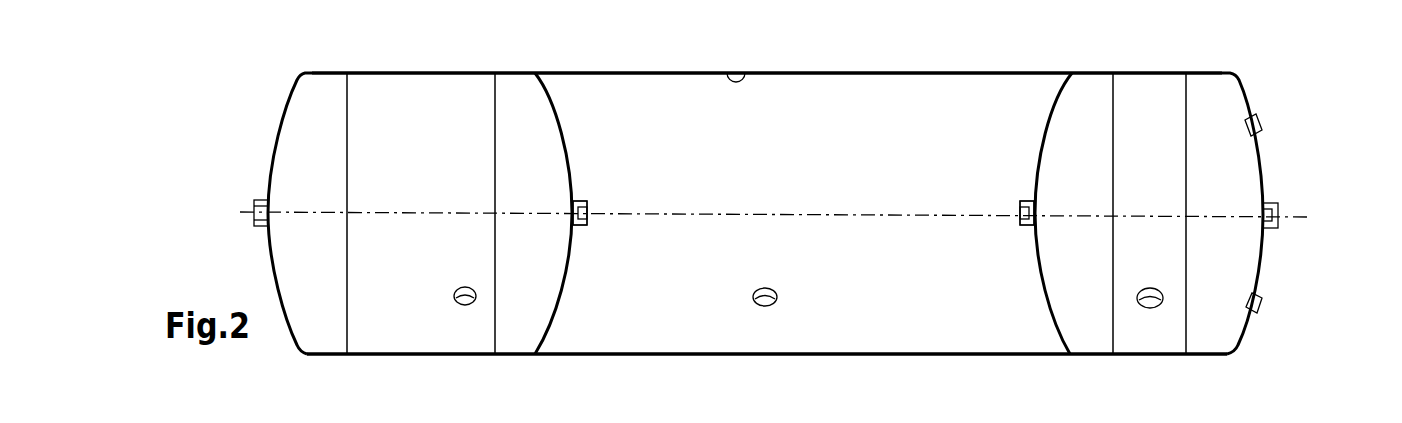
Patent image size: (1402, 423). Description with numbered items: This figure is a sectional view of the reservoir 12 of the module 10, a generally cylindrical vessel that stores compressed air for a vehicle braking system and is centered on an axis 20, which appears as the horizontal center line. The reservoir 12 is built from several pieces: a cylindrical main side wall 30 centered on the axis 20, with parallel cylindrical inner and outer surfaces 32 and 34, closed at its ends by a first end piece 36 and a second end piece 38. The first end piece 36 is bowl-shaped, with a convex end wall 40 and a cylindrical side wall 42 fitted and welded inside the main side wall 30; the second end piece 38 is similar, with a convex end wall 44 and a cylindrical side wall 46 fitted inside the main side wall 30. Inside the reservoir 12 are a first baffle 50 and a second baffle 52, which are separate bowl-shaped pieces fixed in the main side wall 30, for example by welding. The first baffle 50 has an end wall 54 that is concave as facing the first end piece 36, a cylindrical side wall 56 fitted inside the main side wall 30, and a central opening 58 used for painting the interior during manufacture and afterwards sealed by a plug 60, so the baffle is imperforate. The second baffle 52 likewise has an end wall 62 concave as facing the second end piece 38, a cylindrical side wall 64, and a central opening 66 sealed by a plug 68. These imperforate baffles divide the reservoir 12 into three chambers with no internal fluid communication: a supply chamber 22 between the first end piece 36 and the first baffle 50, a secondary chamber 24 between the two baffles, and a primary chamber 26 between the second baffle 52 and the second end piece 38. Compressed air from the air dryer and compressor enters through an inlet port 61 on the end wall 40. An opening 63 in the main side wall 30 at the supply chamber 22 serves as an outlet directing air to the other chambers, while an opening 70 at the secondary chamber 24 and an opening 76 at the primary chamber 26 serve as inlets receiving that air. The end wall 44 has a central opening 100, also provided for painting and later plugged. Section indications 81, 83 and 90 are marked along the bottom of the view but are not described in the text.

The module 10 is at (772, 225).
The reservoir 12 is at (342, 382).
The axis 20 is at (1298, 217).
The supply chamber 22 is at (1157, 187).
The secondary chamber 24 is at (790, 172).
The primary chamber 26 is at (420, 172).
The main side wall 30 is at (767, 53).
The inner surface 32 is at (741, 78).
The outer surface 34 is at (657, 73).
The first end piece 36 is at (1241, 97).
The second end piece 38 is at (266, 195).
The convex end wall 40 is at (1263, 162).
The cylindrical side wall 42 is at (1218, 74).
The convex end wall 44 is at (281, 128).
The cylindrical side wall 46 is at (334, 75).
The first baffle 50 is at (1016, 213).
The second baffle 52 is at (591, 213).
The end wall 54 is at (1043, 290).
The cylindrical side wall 56 is at (1093, 352).
The central opening 58 is at (1018, 212).
The plug 60 is at (1018, 222).
The inlet port 61 is at (1280, 223).
The end wall 62 is at (565, 288).
The opening 63 is at (1148, 309).
The cylindrical side wall 64 is at (512, 352).
The central opening 66 is at (588, 211).
The plug 68 is at (590, 221).
The opening 70 is at (776, 301).
The opening 76 is at (462, 287).
The section line 81 is at (586, 414).
The section line 83 is at (984, 414).
The section line 90 is at (1200, 388).
The central opening 100 is at (253, 211).